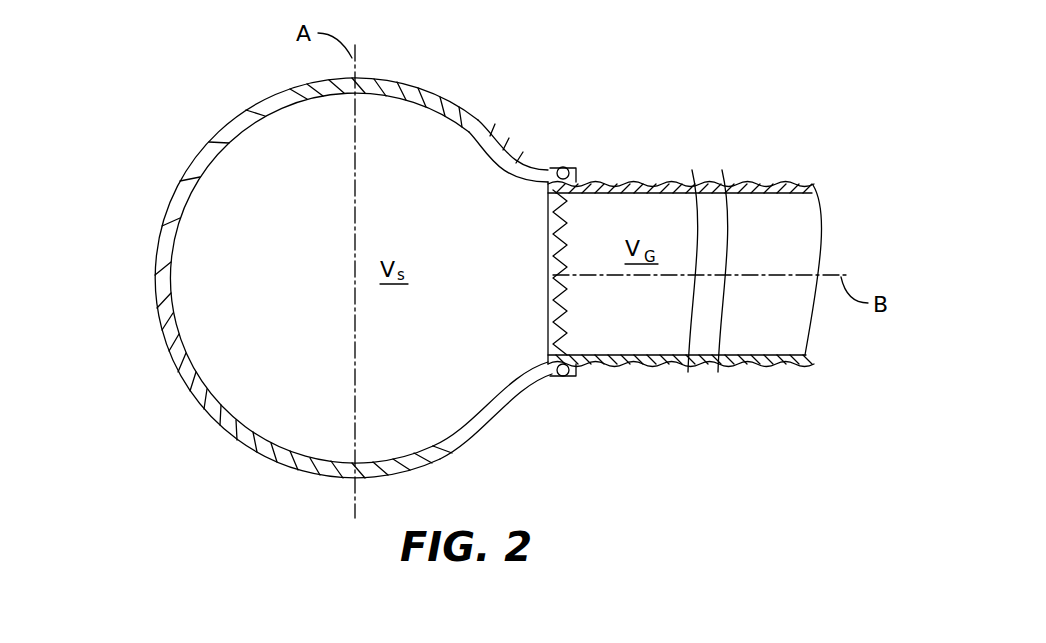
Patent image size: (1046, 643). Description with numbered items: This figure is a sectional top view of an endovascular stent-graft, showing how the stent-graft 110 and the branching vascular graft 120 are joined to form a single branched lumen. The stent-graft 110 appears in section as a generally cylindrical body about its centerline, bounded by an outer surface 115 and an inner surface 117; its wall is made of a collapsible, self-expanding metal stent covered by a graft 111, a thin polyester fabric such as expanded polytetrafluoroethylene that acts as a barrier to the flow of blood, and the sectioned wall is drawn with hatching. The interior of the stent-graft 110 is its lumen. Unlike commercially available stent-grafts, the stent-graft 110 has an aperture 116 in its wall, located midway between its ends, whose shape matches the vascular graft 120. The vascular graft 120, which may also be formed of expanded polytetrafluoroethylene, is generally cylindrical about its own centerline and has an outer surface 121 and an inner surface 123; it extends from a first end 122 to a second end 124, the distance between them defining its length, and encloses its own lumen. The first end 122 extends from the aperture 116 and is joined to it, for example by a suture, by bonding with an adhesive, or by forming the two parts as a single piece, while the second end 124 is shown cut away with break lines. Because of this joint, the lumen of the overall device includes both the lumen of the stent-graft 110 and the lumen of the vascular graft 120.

The stent-graft 110 is at (210, 108).
The graft 111 is at (320, 476).
The outer surface 115 is at (482, 124).
The aperture 116 is at (273, 283).
The inner surface 117 is at (483, 133).
The branching vascular graft 120 is at (715, 107).
The outer surface 121 is at (603, 183).
The first end 122 is at (562, 348).
The inner surface 123 is at (803, 197).
The second end 124 is at (808, 327).